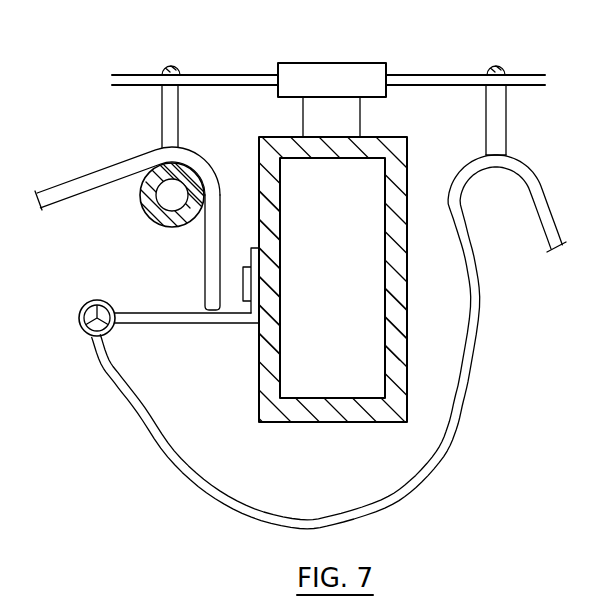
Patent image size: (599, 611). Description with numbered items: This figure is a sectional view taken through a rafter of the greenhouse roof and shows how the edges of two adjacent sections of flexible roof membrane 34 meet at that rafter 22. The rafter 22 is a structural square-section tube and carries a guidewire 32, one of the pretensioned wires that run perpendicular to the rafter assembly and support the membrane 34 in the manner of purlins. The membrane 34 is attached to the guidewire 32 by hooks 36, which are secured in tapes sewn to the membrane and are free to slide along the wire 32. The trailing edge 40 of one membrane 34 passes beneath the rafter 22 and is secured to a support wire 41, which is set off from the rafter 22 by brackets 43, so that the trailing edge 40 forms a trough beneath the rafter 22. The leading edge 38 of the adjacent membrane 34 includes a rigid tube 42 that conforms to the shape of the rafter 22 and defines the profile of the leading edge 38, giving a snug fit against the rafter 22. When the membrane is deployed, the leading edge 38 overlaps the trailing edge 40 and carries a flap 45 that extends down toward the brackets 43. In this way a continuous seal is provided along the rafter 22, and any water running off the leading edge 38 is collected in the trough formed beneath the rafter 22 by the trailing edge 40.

The rafter 22 is at (384, 323).
The guidewire 32 is at (218, 75).
The roof membrane 34 is at (61, 194).
The hook 36 is at (164, 118).
The leading edge 38 is at (193, 152).
The trailing edge 40 is at (133, 417).
The support wire 41 is at (80, 315).
The rigid tube 42 is at (167, 228).
The bracket 43 is at (188, 324).
The flap 45 is at (206, 275).